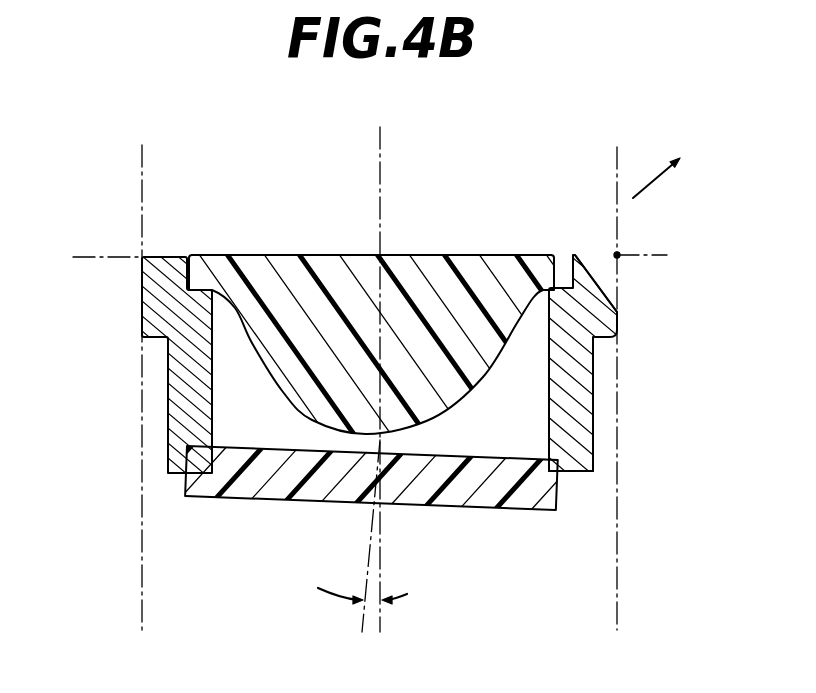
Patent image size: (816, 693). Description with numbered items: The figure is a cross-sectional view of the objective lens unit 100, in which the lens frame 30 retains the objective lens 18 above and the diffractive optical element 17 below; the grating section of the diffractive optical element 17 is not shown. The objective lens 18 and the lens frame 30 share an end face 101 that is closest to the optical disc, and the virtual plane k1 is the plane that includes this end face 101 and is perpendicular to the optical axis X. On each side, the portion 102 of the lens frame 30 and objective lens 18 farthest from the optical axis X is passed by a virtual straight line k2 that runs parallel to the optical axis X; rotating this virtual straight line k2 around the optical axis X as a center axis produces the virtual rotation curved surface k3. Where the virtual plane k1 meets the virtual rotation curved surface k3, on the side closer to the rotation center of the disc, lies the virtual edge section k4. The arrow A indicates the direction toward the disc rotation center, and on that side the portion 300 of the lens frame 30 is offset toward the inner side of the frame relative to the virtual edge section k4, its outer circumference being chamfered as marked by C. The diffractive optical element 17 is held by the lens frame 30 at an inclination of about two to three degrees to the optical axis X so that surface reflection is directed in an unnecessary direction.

The objective lens unit 100 is at (265, 238).
The end face 101 is at (352, 255).
The objective lens 18 is at (420, 275).
The portion 102 is at (142, 302).
The portion 300 is at (598, 288).
The lens frame 30 is at (578, 455).
The diffractive optical element 17 is at (440, 498).
The optical axis X is at (380, 146).
The virtual plane k1 is at (96, 258).
The virtual straight line k2 is at (142, 532).
The virtual rotation curved surface k3 is at (618, 550).
The virtual edge section k4 is at (620, 253).
The arrow A is at (656, 173).